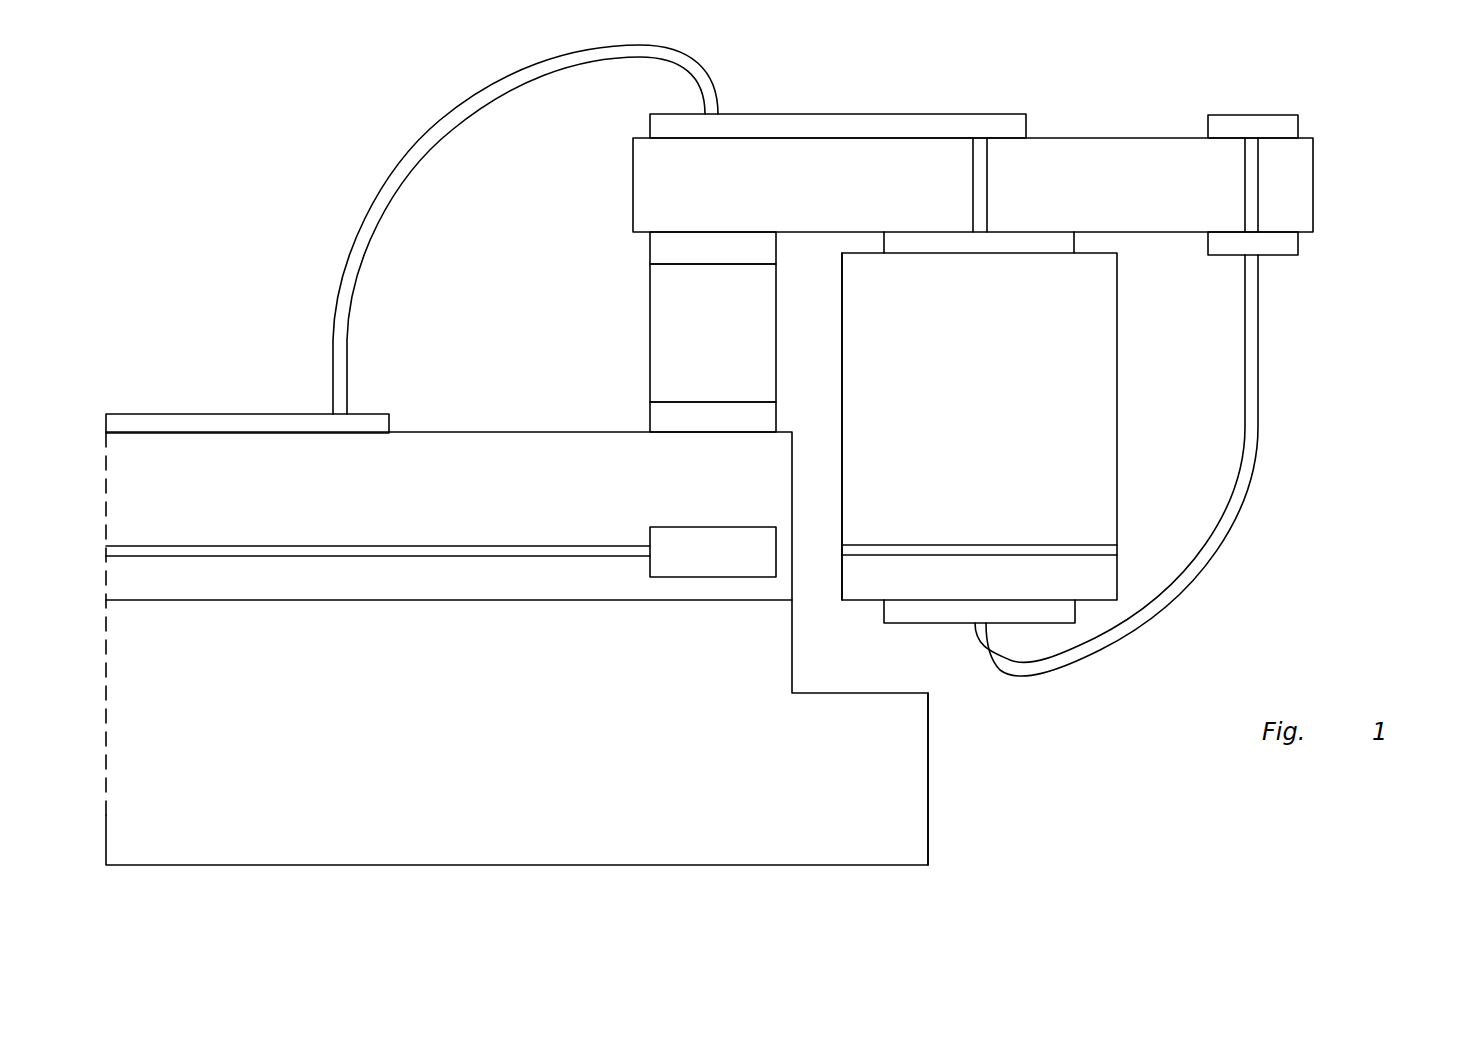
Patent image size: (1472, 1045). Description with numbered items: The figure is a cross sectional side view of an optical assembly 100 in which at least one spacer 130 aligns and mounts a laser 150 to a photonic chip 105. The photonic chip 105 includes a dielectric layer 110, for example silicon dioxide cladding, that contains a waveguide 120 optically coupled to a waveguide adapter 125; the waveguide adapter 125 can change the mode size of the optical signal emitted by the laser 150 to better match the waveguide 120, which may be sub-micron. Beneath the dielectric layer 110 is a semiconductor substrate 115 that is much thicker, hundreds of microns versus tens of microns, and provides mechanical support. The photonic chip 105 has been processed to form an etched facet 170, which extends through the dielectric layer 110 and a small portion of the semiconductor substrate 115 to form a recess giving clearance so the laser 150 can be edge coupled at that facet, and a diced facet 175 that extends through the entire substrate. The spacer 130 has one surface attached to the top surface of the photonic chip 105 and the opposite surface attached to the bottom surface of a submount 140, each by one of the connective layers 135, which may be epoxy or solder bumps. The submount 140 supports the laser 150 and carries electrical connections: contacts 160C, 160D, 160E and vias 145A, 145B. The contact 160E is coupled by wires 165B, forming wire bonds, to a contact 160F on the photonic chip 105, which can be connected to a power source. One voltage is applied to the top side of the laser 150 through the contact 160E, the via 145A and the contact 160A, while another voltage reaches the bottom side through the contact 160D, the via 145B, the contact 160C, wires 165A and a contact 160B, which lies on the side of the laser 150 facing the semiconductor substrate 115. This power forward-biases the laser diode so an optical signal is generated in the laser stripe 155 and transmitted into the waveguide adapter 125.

The optical assembly 100 is at (440, 56).
The photonic chip 105 is at (890, 882).
The dielectric layer 110 is at (333, 588).
The semiconductor substrate 115 is at (590, 868).
The waveguide 120 is at (383, 546).
The waveguide adapter 125 is at (694, 538).
The spacer 130 is at (658, 338).
The connective layers 135 is at (660, 417).
The submount 140 is at (647, 212).
The via 145A is at (983, 165).
The via 145B is at (1253, 196).
The laser 150 is at (1012, 278).
The laser stripe 155 is at (979, 544).
The contact 160A is at (903, 242).
The contact 160B is at (955, 617).
The contact 160C is at (1283, 243).
The contact 160D is at (1283, 127).
The contact 160E is at (817, 122).
The contact 160F is at (250, 423).
The wires 165A is at (1244, 477).
The wires 165B is at (360, 260).
The etched facet 170 is at (792, 453).
The diced facet 175 is at (928, 772).